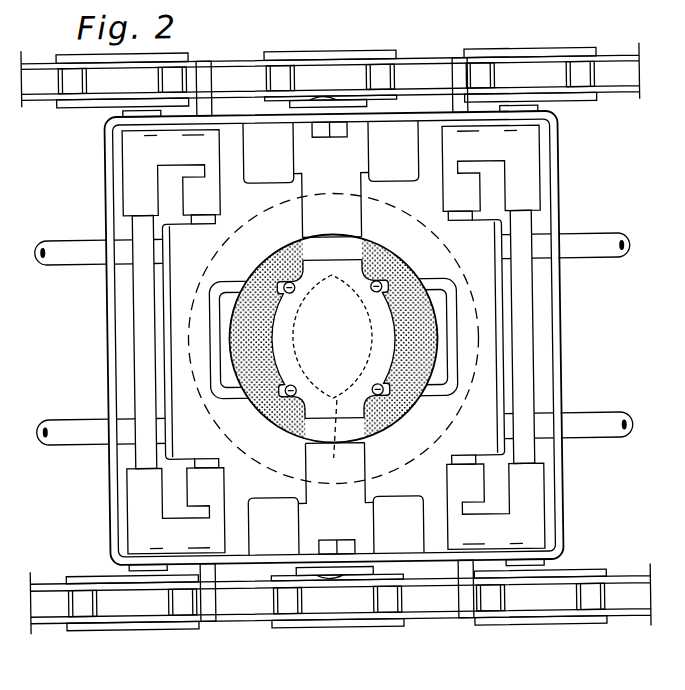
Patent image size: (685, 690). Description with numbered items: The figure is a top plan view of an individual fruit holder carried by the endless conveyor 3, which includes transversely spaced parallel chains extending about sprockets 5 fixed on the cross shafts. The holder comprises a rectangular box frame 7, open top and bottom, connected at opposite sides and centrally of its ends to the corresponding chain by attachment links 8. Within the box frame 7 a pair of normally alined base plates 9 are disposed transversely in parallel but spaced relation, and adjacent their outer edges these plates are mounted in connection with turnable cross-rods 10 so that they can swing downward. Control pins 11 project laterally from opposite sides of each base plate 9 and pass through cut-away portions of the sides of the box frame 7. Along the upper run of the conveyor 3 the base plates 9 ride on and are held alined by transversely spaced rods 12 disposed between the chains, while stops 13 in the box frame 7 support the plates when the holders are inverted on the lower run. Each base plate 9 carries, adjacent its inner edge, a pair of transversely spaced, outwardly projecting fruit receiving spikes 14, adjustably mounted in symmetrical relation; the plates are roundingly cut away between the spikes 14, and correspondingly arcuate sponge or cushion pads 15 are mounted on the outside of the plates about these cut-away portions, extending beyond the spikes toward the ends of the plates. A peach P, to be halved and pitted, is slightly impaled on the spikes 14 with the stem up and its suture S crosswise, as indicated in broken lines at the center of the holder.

The endless conveyor 3 is at (145, 338).
The sprockets 5 is at (536, 52).
The rectangular box frame 7 is at (560, 500).
The attachment links 8 is at (306, 107).
The base plates 9 is at (385, 204).
The turnable cross-rods 10 is at (145, 371).
The control pins 11 is at (206, 73).
The rods 12 is at (605, 234).
The stops 13 is at (379, 149).
The fruit receiving spikes 14 is at (293, 391).
The sponge or cushion pads 15 is at (250, 367).
The rotor section S is at (333, 375).
The peach P is at (258, 466).